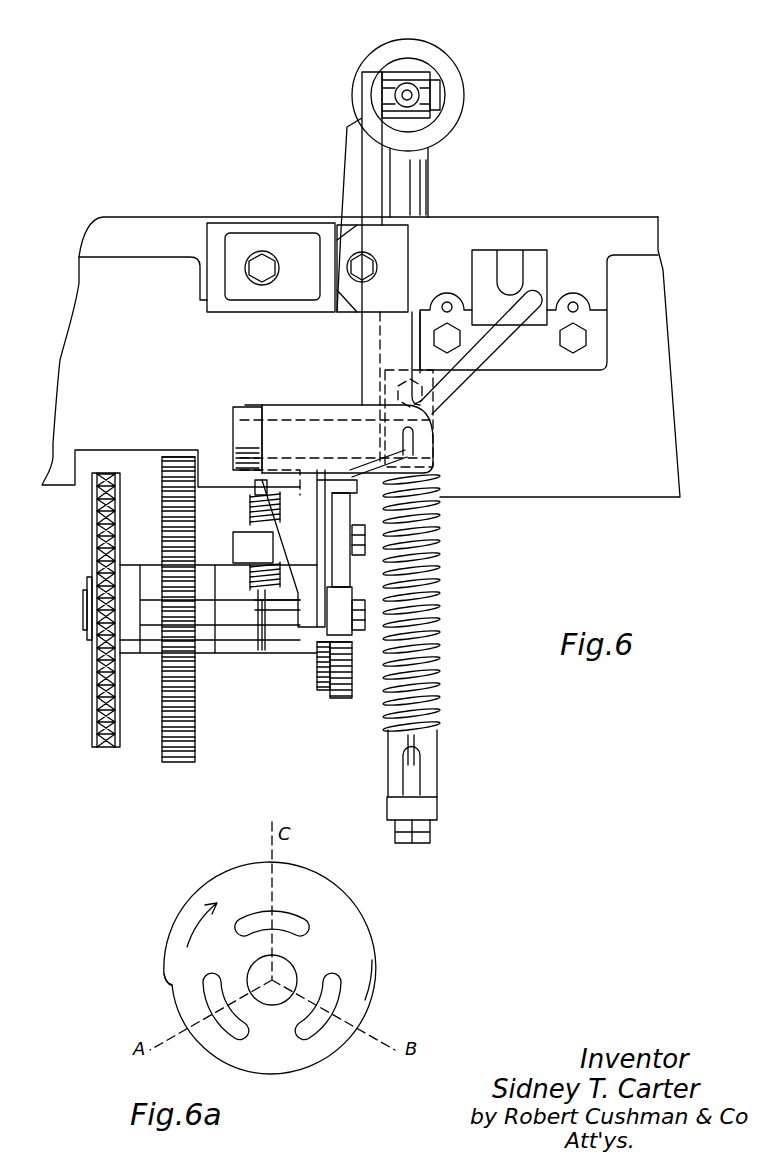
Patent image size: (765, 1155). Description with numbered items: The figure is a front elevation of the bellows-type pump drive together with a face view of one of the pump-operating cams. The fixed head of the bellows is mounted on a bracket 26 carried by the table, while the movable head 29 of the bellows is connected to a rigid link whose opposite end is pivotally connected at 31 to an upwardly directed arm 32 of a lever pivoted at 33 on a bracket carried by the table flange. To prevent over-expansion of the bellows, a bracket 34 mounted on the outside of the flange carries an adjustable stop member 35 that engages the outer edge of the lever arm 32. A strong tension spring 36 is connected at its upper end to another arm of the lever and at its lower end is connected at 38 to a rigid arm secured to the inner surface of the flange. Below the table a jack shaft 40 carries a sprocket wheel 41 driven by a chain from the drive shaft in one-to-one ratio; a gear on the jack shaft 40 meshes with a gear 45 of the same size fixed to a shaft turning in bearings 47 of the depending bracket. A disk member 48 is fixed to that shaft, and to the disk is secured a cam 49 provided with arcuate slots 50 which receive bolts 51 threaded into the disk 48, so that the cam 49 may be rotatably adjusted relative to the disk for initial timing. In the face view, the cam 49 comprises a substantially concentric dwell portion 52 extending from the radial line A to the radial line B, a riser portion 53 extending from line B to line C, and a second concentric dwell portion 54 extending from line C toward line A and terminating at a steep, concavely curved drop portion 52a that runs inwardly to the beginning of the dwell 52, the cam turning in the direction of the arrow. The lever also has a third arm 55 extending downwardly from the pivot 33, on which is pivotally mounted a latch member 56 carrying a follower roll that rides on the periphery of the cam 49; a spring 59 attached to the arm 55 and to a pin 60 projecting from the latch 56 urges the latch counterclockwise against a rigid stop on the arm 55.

In FIG. 6, the bracket 26 is at (420, 184).
In FIG. 6, the movable head 29 is at (409, 63).
In FIG. 6, the pivotal connection 31 is at (437, 87).
In FIG. 6, the lever arm 32 is at (370, 148).
In FIG. 6, the lever pivot 33 is at (235, 428).
In FIG. 6, the bracket 34 is at (223, 253).
In FIG. 6, the adjustable stop member 35 is at (368, 267).
In FIG. 6, the tension spring 36 is at (442, 683).
In FIG. 6, the spring connection 38 is at (428, 808).
In FIG. 6, the jack shaft 40 is at (88, 605).
In FIG. 6, the sprocket wheel 41 is at (93, 528).
In FIG. 6, the gear 45 is at (180, 758).
In FIG. 6, the bearings 47 is at (238, 628).
In FIG. 6, the disk member 48 is at (325, 673).
In FIG. 6, the cam 49 is at (340, 695).
In FIG. 6A, the cam 49 is at (357, 930).
In FIG. 6A, the arcuate slots 50 is at (300, 905).
In FIG. 6, the bolts 51 is at (370, 556).
In FIG. 6A, the concentric dwell portion 52 is at (300, 1066).
In FIG. 6A, the steep drop portion 52a is at (165, 986).
In FIG. 6A, the riser portion 53 is at (372, 977).
In FIG. 6A, the second concentric dwell portion 54 is at (197, 893).
In FIG. 6, the third lever arm 55 is at (308, 523).
In FIG. 6, the latch member 56 is at (375, 607).
In FIG. 6, the spring 59 is at (258, 520).
In FIG. 6, the pin 60 is at (271, 617).